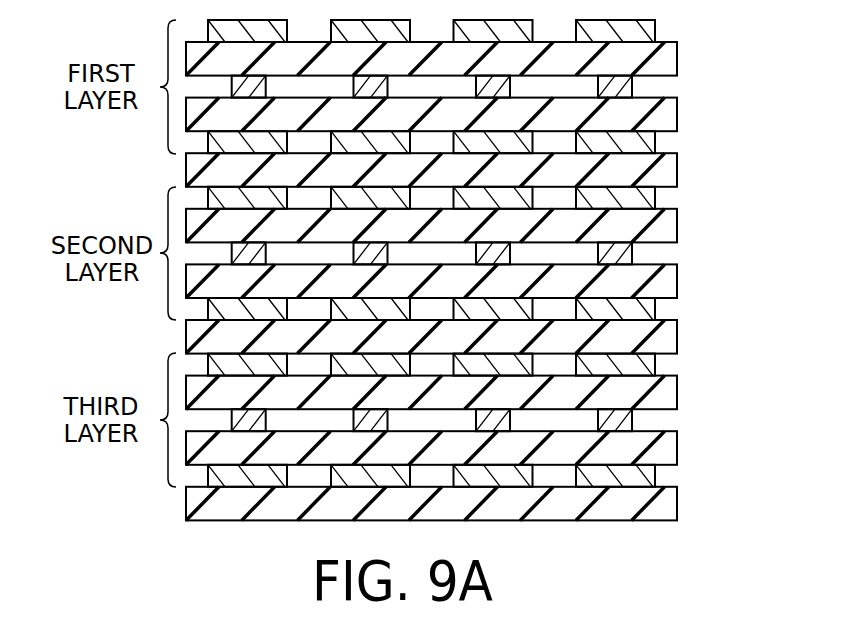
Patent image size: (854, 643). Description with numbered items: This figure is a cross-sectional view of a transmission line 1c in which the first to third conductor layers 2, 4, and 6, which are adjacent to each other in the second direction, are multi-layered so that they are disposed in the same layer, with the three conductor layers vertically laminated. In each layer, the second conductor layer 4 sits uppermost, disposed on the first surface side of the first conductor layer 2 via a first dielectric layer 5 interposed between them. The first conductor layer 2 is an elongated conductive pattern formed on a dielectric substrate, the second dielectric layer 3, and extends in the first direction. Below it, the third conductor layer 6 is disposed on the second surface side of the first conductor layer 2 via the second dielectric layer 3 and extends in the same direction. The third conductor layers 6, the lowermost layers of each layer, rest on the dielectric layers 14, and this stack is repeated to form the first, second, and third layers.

The transmission line 1c is at (168, 569).
The first conductor layer 2 is at (633, 88).
The second dielectric layer 3 is at (678, 112).
The second conductor layer 4 is at (656, 32).
The first dielectric layer 5 is at (678, 57).
The third conductor layer 6 is at (655, 142).
The dielectric layer 14 is at (678, 170).